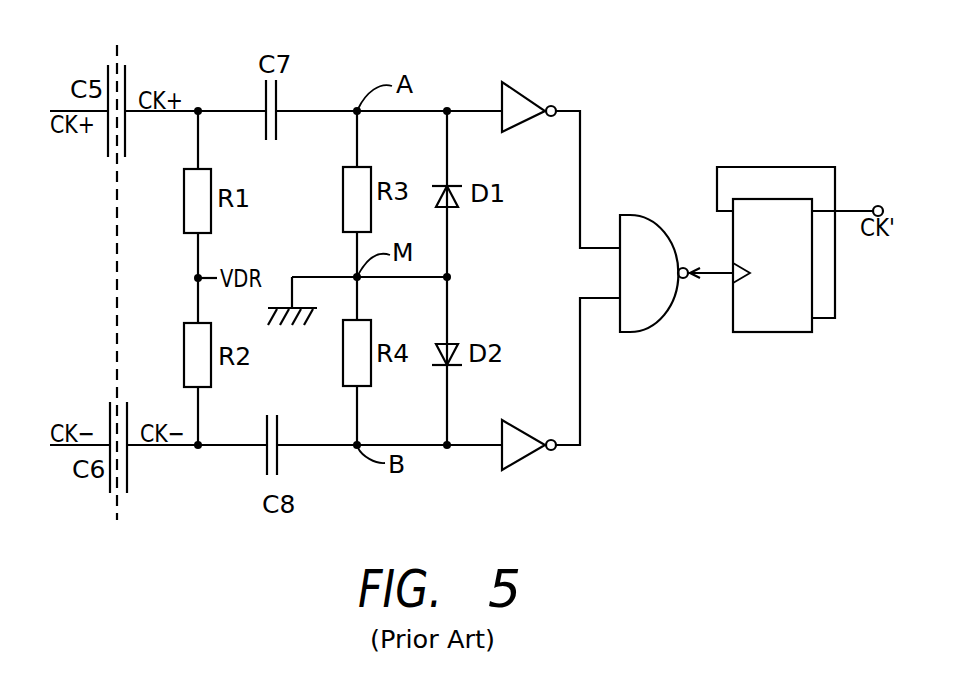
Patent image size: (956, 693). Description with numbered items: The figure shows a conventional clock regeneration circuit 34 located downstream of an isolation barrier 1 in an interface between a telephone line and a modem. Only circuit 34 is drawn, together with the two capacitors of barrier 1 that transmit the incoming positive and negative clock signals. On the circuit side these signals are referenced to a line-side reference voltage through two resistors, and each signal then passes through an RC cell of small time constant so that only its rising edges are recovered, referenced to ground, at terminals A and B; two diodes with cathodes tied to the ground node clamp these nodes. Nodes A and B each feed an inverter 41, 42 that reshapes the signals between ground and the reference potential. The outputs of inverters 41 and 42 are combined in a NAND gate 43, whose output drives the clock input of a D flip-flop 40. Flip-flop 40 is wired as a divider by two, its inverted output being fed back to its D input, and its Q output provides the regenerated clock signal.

The isolation barrier 1 is at (117, 53).
The clock regeneration circuit 34 is at (631, 37).
The D flip-flop 40 is at (795, 333).
The inverter 41 is at (513, 84).
The inverter 42 is at (515, 461).
The NAND gate 43 is at (631, 333).